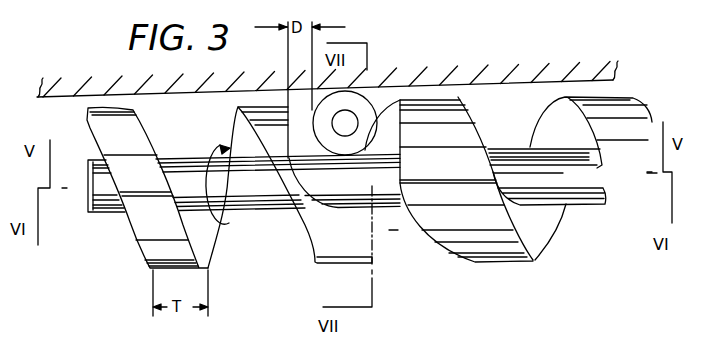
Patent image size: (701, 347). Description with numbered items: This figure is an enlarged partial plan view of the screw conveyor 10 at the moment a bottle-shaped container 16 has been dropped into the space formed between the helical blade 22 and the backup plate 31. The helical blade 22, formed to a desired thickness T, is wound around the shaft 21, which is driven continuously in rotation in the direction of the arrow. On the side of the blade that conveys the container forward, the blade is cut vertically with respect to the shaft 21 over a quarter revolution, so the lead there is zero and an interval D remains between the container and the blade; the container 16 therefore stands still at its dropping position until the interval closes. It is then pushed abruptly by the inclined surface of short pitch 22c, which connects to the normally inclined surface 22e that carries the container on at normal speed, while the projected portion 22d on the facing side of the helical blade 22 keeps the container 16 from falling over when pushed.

The screw conveyor 10 is at (364, 212).
The bottle-shaped container 16 is at (367, 100).
The shaft 21 is at (587, 204).
The helical blade 22 is at (529, 262).
The inclined surface of short pitch 22c is at (383, 244).
The projected portion 22d is at (437, 190).
The normally inclined surface 22e is at (393, 228).
The backup plate 31 is at (462, 84).